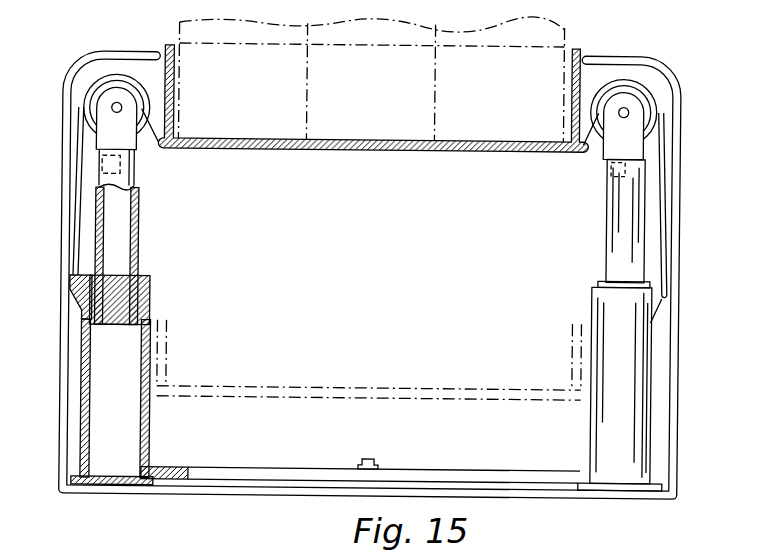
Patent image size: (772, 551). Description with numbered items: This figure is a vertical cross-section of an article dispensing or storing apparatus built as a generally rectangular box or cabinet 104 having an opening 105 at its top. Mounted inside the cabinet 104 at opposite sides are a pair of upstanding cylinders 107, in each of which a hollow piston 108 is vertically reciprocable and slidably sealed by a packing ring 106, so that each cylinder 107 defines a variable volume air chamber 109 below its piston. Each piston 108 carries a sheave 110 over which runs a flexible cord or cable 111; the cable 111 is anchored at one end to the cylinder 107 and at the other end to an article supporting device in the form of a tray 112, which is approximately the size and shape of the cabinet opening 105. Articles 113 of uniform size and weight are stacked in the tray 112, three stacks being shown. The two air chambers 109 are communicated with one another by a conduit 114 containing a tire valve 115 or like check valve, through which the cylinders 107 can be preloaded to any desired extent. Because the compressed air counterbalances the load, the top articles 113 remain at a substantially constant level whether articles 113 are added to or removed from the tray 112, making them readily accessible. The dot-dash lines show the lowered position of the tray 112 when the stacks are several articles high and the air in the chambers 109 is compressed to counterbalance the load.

The cabinet 104 is at (681, 226).
The opening 105 is at (577, 52).
The packing ring 106 is at (150, 294).
The cylinder 107 is at (82, 411).
The hollow piston 108 is at (138, 234).
The air chamber 109 is at (143, 393).
The sheave 110 is at (93, 105).
The cable 111 is at (77, 201).
The tray 112 is at (283, 149).
The articles 113 is at (232, 121).
The conduit 114 is at (286, 468).
The tire valve 115 is at (376, 458).